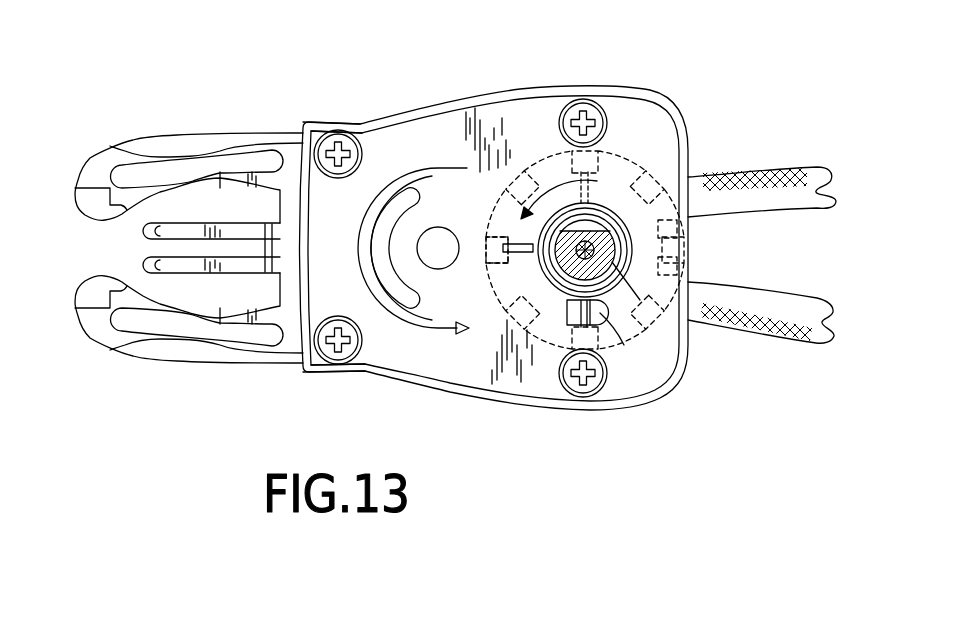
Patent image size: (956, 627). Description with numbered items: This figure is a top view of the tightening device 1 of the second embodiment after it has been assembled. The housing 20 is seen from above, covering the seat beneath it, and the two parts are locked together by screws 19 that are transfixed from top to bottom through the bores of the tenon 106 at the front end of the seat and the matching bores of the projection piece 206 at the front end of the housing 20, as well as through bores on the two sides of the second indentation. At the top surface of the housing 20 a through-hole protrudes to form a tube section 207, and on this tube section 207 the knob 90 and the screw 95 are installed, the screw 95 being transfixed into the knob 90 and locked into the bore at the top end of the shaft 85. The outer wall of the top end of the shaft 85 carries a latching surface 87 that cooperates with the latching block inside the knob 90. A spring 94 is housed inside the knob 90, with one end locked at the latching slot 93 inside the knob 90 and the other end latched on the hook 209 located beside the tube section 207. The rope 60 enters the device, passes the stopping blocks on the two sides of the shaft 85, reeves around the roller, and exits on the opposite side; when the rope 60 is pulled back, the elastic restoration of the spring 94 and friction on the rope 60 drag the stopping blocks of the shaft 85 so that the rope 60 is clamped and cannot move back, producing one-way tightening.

The tightening device 1 is at (216, 101).
The screws 19 is at (350, 131).
The housing 20 is at (432, 133).
The rope 60 is at (798, 172).
The shaft 85 is at (614, 256).
The latching surface 87 is at (576, 231).
The knob 90 is at (663, 170).
The latching slot 93 is at (500, 263).
The spring 94 is at (608, 207).
The screw 95 is at (631, 233).
The tenon 106 is at (140, 356).
The projection piece 206 is at (300, 152).
The tube section 207 is at (640, 300).
The hook 209 is at (624, 345).